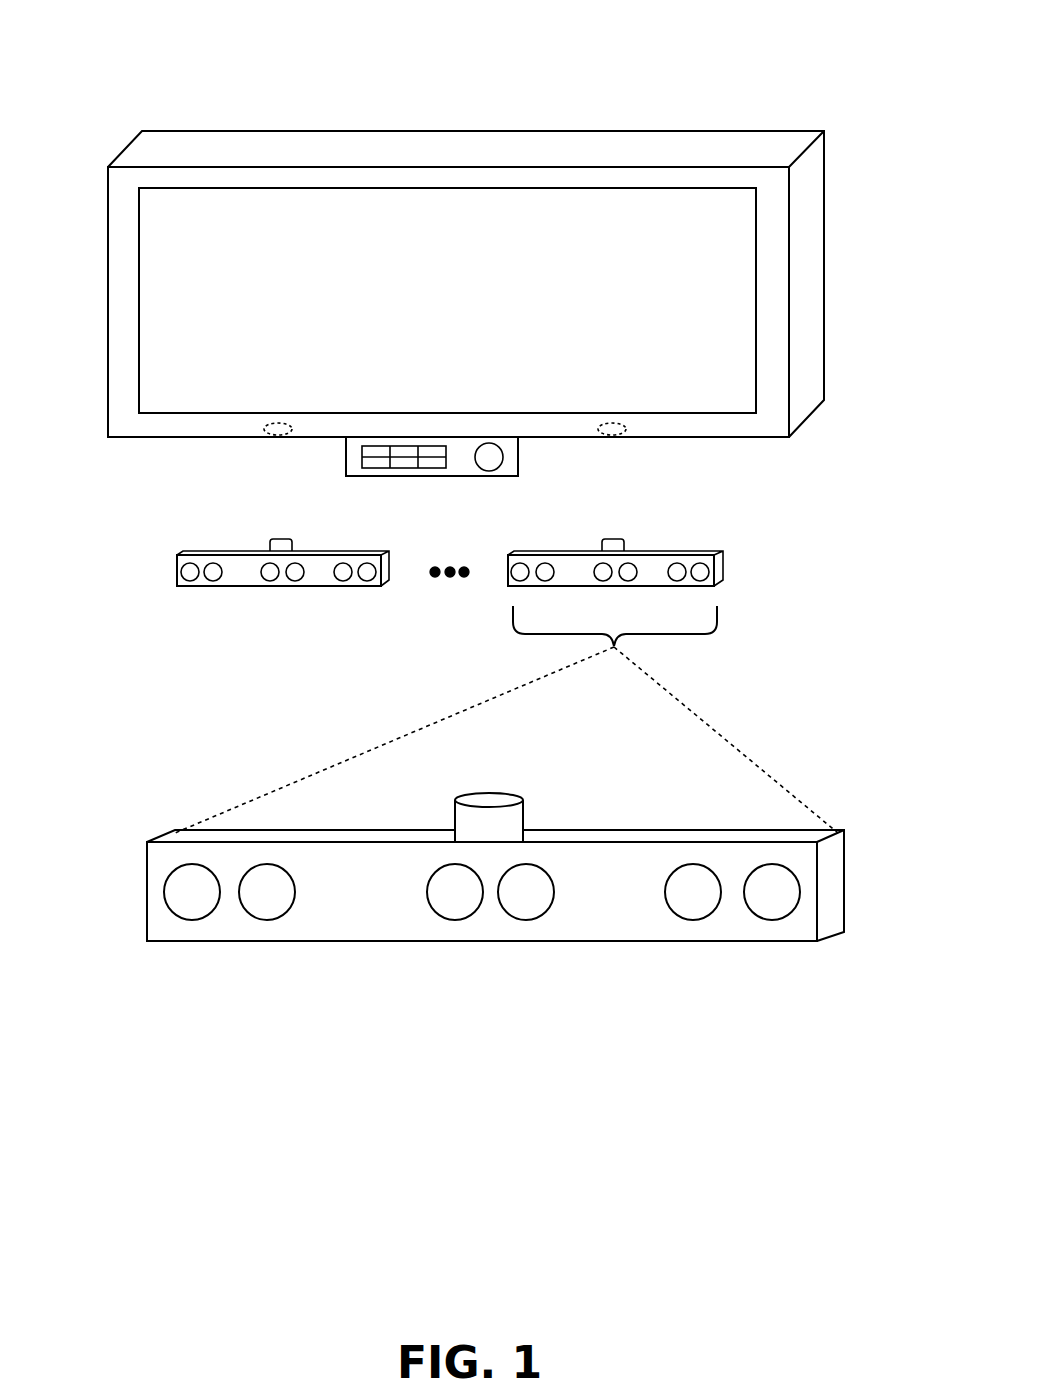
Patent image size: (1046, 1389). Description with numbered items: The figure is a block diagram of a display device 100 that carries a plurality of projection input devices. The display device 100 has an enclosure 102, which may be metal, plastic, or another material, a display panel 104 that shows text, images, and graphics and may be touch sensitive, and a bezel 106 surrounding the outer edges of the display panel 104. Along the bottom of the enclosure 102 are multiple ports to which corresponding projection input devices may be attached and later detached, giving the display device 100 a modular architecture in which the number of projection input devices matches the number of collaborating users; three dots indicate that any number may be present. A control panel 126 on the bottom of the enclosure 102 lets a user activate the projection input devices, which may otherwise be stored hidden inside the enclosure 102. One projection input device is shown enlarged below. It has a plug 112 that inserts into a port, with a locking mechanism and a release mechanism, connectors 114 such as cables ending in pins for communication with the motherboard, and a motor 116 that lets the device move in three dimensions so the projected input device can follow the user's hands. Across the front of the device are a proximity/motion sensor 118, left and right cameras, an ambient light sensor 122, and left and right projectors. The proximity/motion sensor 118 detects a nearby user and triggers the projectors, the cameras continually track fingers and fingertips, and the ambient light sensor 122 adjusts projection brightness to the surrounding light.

The display device 100 is at (95, 32).
The enclosure 102 is at (740, 142).
The display panel 104 is at (513, 209).
The bezel 106 is at (292, 180).
The plug 112 is at (455, 818).
The connectors 114 is at (478, 800).
The motor 116 is at (522, 802).
The proximity/motion sensor 118 is at (192, 920).
The ambient light sensor 122 is at (772, 920).
The control panel 126 is at (378, 477).